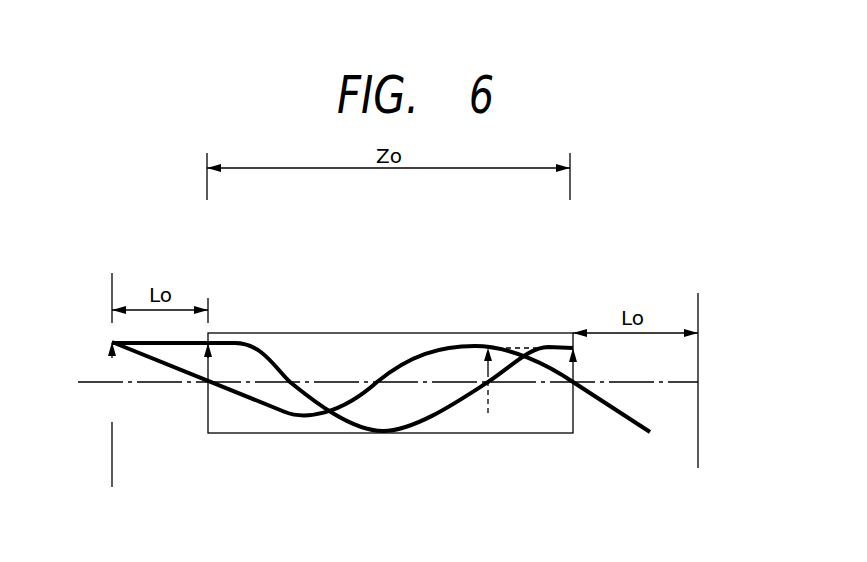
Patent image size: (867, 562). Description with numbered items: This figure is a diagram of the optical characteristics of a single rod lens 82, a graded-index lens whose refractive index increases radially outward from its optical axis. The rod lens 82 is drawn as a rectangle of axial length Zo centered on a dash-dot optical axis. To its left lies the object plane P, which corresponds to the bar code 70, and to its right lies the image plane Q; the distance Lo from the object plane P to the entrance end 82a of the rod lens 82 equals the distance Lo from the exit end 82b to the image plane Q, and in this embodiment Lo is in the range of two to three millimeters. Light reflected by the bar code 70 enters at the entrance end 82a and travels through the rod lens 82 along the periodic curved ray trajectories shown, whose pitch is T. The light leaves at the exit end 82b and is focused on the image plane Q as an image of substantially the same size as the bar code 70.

The bar code 70 is at (110, 386).
The rod lens 82 is at (513, 434).
The entrance end 82a is at (207, 420).
The exit end 82b is at (574, 414).
The object plane P is at (113, 400).
The image plane Q is at (700, 413).